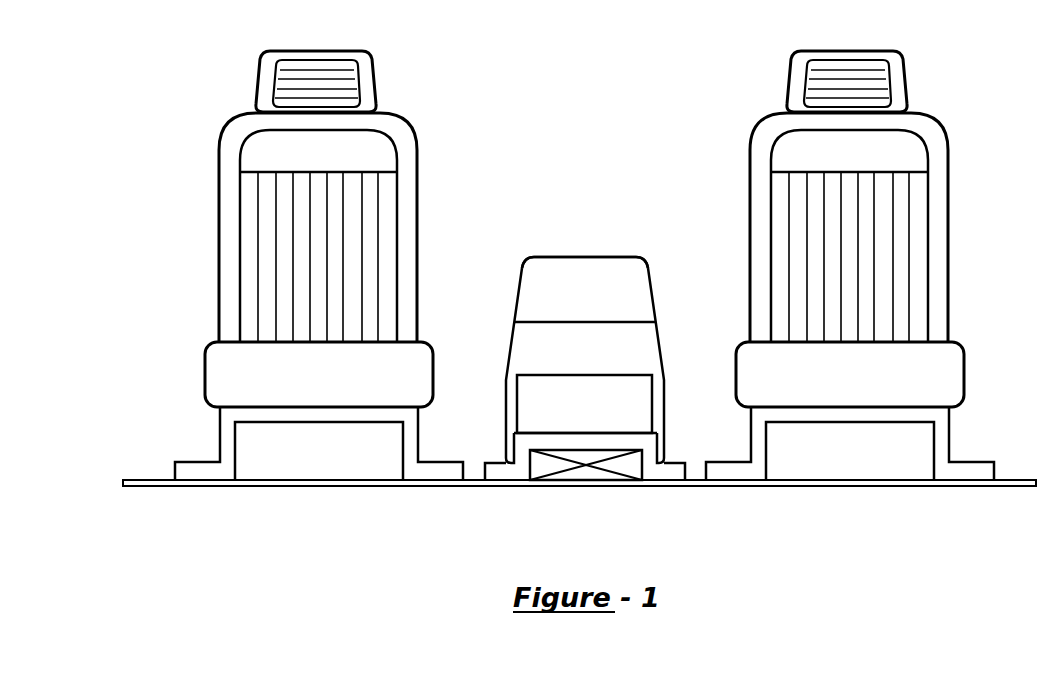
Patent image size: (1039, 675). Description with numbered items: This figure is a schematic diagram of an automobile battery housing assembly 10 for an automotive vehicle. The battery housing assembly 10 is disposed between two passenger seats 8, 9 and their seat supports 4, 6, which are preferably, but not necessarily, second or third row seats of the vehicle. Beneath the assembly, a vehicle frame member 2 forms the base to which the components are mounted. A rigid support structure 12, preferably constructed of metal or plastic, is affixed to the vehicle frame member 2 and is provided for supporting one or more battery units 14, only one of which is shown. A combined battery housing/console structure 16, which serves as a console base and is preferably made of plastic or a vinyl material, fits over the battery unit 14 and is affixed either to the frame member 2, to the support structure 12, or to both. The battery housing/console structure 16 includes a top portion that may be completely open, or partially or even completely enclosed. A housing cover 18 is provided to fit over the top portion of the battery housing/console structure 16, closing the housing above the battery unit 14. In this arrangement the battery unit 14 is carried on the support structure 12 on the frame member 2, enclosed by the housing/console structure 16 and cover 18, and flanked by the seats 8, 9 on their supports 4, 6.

The vehicle frame member 2 is at (284, 487).
The seat support 4 is at (220, 433).
The seat support 6 is at (947, 425).
The passenger seat 8 is at (219, 235).
The passenger seat 9 is at (947, 240).
The battery housing assembly 10 is at (533, 165).
The rigid support structure 12 is at (503, 482).
The battery unit 14 is at (605, 375).
The battery housing/console structure 16 is at (513, 335).
The housing cover 18 is at (612, 257).